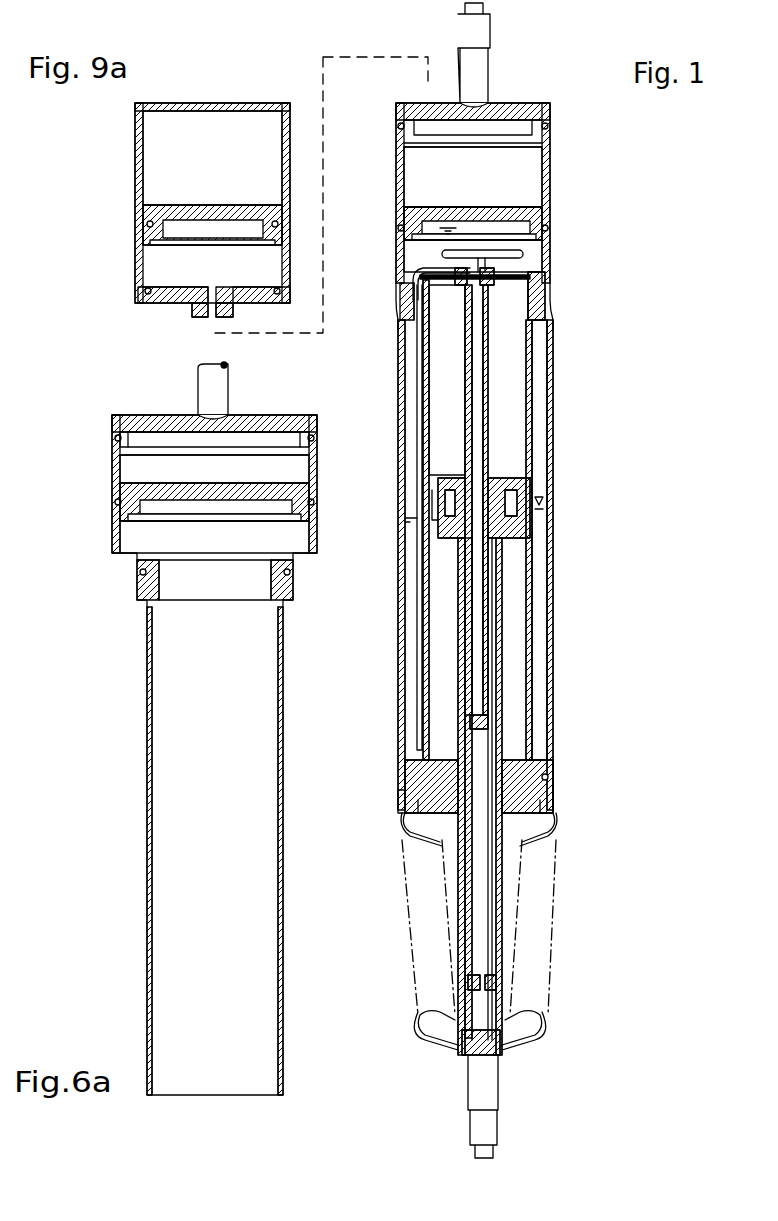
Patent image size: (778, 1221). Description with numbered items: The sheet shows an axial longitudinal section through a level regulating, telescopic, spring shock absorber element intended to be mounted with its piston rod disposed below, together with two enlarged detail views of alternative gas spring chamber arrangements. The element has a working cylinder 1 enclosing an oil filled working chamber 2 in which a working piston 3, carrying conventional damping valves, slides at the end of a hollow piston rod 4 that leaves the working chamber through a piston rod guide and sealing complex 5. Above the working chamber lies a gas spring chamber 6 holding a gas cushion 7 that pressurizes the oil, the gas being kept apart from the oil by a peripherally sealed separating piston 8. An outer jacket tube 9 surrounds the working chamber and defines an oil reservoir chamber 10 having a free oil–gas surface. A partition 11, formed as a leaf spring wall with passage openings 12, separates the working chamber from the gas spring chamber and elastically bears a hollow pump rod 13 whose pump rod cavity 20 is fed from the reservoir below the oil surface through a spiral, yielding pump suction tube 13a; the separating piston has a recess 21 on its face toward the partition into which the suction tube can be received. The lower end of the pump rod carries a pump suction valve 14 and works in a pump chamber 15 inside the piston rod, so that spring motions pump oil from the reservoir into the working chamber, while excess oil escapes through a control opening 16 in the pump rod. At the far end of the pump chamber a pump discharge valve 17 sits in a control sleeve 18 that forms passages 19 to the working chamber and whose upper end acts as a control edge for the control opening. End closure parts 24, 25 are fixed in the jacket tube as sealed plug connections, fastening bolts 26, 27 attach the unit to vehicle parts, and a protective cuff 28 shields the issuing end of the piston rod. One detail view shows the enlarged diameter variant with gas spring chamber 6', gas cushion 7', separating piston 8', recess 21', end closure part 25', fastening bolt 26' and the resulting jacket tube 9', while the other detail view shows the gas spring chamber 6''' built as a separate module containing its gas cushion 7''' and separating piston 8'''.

In FIG. 1, the working cylinder 1 is at (423, 415).
In FIG. 1, the working chamber 2 is at (442, 442).
In FIG. 1, the working piston 3 is at (442, 535).
In FIG. 1, the hollow piston rod 4 is at (465, 923).
In FIG. 1, the piston rod guide and sealing complex 5 is at (410, 790).
In FIG. 1, the gas spring chamber 6 is at (503, 216).
In FIG. 1, the gas cushion 7 is at (495, 176).
In FIG. 1, the separating piston 8 is at (495, 211).
In FIG. 1, the outer jacket tube 9 is at (499, 565).
In FIG. 1, the oil reservoir chamber 10 is at (542, 610).
In FIG. 1, the partition 11 is at (520, 276).
In FIG. 1, the passage openings 12 is at (508, 283).
In FIG. 1, the hollow pump rod 13 is at (487, 373).
In FIG. 1, the pump suction tube 13a is at (525, 255).
In FIG. 1, the pump suction valve 14 is at (473, 717).
In FIG. 1, the pump chamber 15 is at (478, 878).
In FIG. 1, the control opening 16 is at (480, 470).
In FIG. 1, the pump discharge valve 17 is at (468, 992).
In FIG. 1, the control sleeve 18 is at (503, 982).
In FIG. 1, the passages 19 is at (463, 862).
In FIG. 1, the pump rod cavity 20 is at (475, 347).
In FIG. 1, the recess 21 is at (444, 260).
In FIG. 1, the end closure part 24 is at (520, 807).
In FIG. 1, the end closure part 25 is at (476, 101).
In FIG. 1, the fastening bolt 26 is at (503, 51).
In FIG. 1, the fastening bolt 27 is at (483, 1130).
In FIG. 1, the protective cuff 28 is at (530, 1037).
In FIG. 6A, the gas spring chamber 6' is at (242, 511).
In FIG. 6A, the gas cushion 7' is at (178, 454).
In FIG. 6A, the separating piston 8' is at (178, 497).
In FIG. 6A, the jacket tube 9' is at (234, 851).
In FIG. 6A, the recess 21' is at (182, 544).
In FIG. 6A, the end closure part 25' is at (184, 414).
In FIG. 6A, the fastening bolt 26' is at (183, 388).
In FIG. 9A, the gas spring chamber 6''' is at (207, 209).
In FIG. 9A, the gas cushion 7''' is at (212, 158).
In FIG. 9A, the separating piston 8''' is at (182, 205).